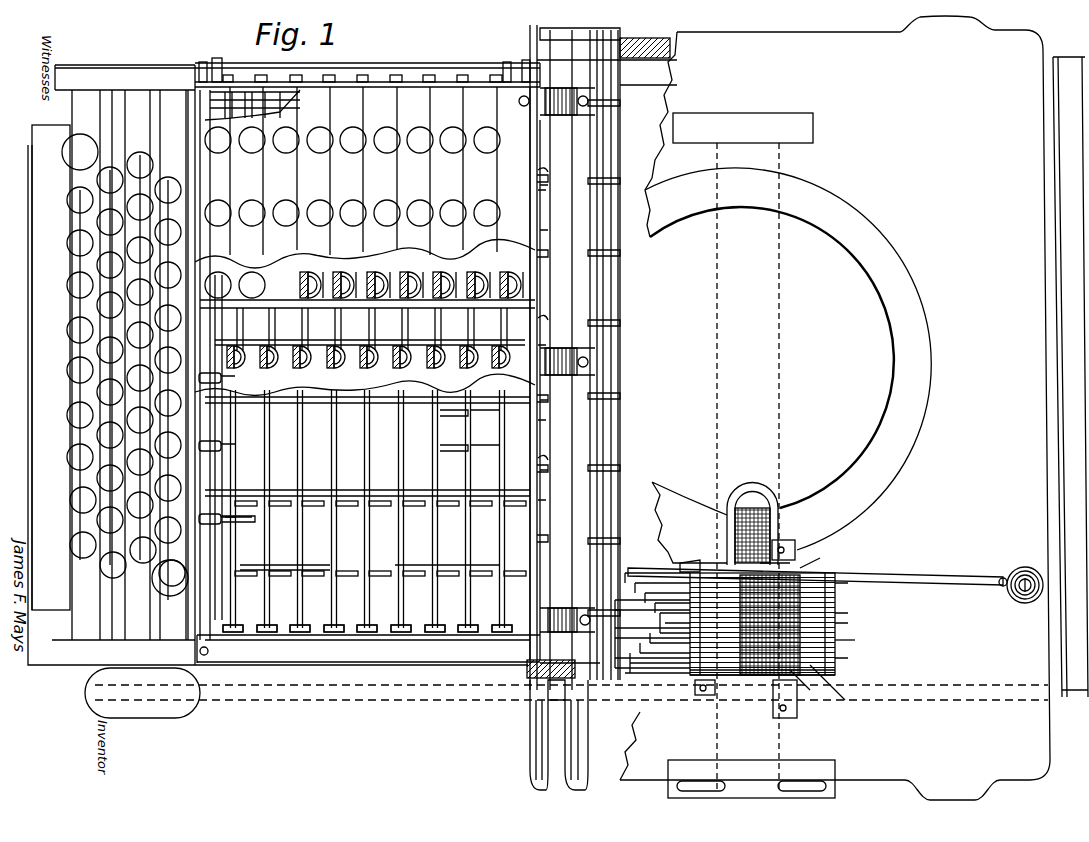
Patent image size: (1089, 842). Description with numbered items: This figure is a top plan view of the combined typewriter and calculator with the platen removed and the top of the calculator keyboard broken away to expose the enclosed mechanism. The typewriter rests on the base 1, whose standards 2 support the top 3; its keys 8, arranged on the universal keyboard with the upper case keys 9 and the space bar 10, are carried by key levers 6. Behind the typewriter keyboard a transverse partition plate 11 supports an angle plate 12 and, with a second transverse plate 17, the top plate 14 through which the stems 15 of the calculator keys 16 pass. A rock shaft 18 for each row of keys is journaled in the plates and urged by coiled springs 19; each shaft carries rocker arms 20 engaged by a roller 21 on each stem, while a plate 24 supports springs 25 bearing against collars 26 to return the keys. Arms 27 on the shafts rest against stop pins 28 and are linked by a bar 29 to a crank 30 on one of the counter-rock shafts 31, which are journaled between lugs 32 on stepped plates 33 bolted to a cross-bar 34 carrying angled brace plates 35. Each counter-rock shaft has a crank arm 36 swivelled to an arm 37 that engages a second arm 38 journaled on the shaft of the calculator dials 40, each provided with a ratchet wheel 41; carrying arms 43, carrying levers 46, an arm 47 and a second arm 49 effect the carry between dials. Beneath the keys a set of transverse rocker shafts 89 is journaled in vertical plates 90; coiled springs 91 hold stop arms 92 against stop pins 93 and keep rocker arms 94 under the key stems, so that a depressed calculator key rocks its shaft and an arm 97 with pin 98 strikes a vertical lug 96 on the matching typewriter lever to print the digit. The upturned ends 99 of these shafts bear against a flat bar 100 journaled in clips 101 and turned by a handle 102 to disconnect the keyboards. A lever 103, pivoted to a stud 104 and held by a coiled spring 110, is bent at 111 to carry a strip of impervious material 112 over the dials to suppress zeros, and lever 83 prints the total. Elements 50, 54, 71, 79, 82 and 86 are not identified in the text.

The base 1 is at (75, 666).
The standards 2 is at (655, 45).
The top 3 is at (1020, 50).
The key levers 6 is at (315, 430).
The keys 8 is at (66, 325).
The upper case keys 9 is at (86, 140).
The space bar 10 is at (45, 525).
The transverse partition plate 11 is at (198, 615).
The angle plate 12 is at (210, 265).
The top plate 14 is at (355, 95).
The stems 15 is at (440, 278).
The calculator keys 16 is at (388, 150).
The second transverse plate 17 is at (528, 580).
The rock shafts 18 is at (348, 342).
The coiled springs 19 is at (205, 320).
The rocker arms 20 is at (337, 275).
The roller 21 is at (300, 275).
The plate 24 is at (410, 365).
The springs 25 is at (245, 350).
The collars 26 is at (408, 272).
The arms 27 is at (520, 66).
The stop pins 28 is at (540, 344).
The bar 29 is at (544, 172).
The crank 30 is at (543, 225).
The counter-rock shafts 31 is at (620, 290).
The lugs 32 is at (620, 254).
The stepped plates 33 is at (592, 148).
The cross-bar 34 is at (575, 432).
The angled brace plates 35 is at (545, 100).
The crank arm 36 is at (645, 615).
The arm 37 is at (690, 600).
The second arm 38 is at (715, 665).
The calculator dials 40 is at (800, 578).
The ratchet wheel 41 is at (765, 670).
The carrying arms 43 is at (838, 588).
The carrying levers 46 is at (838, 625).
The arm 47 is at (842, 691).
The second arm 49 is at (838, 640).
The link 50 is at (812, 692).
The link 54 is at (800, 568).
The guide 71 is at (700, 562).
The block 79 is at (790, 545).
The slotted plate 82 is at (751, 779).
The lever 83 is at (310, 702).
The platen 86 is at (790, 452).
The transverse rocker shafts 89 is at (235, 100).
The vertical plates 90 is at (290, 92).
The coiled springs 91 is at (268, 630).
The stop arms 92 is at (235, 128).
The stop pins 93 is at (268, 95).
The rocker arms 94 is at (372, 432).
The vertical lug 96 is at (240, 522).
The arm 97 is at (250, 515).
The pin 98 is at (478, 445).
The upturned ends 99 is at (297, 75).
The flat bar 100 is at (385, 82).
The clips 101 is at (200, 70).
The handle 102 is at (216, 58).
The lever 103 is at (907, 572).
The stud 104 is at (1025, 567).
The coiled spring 110 is at (1008, 598).
The bend 111 is at (775, 500).
The strip of impervious material 112 is at (745, 515).